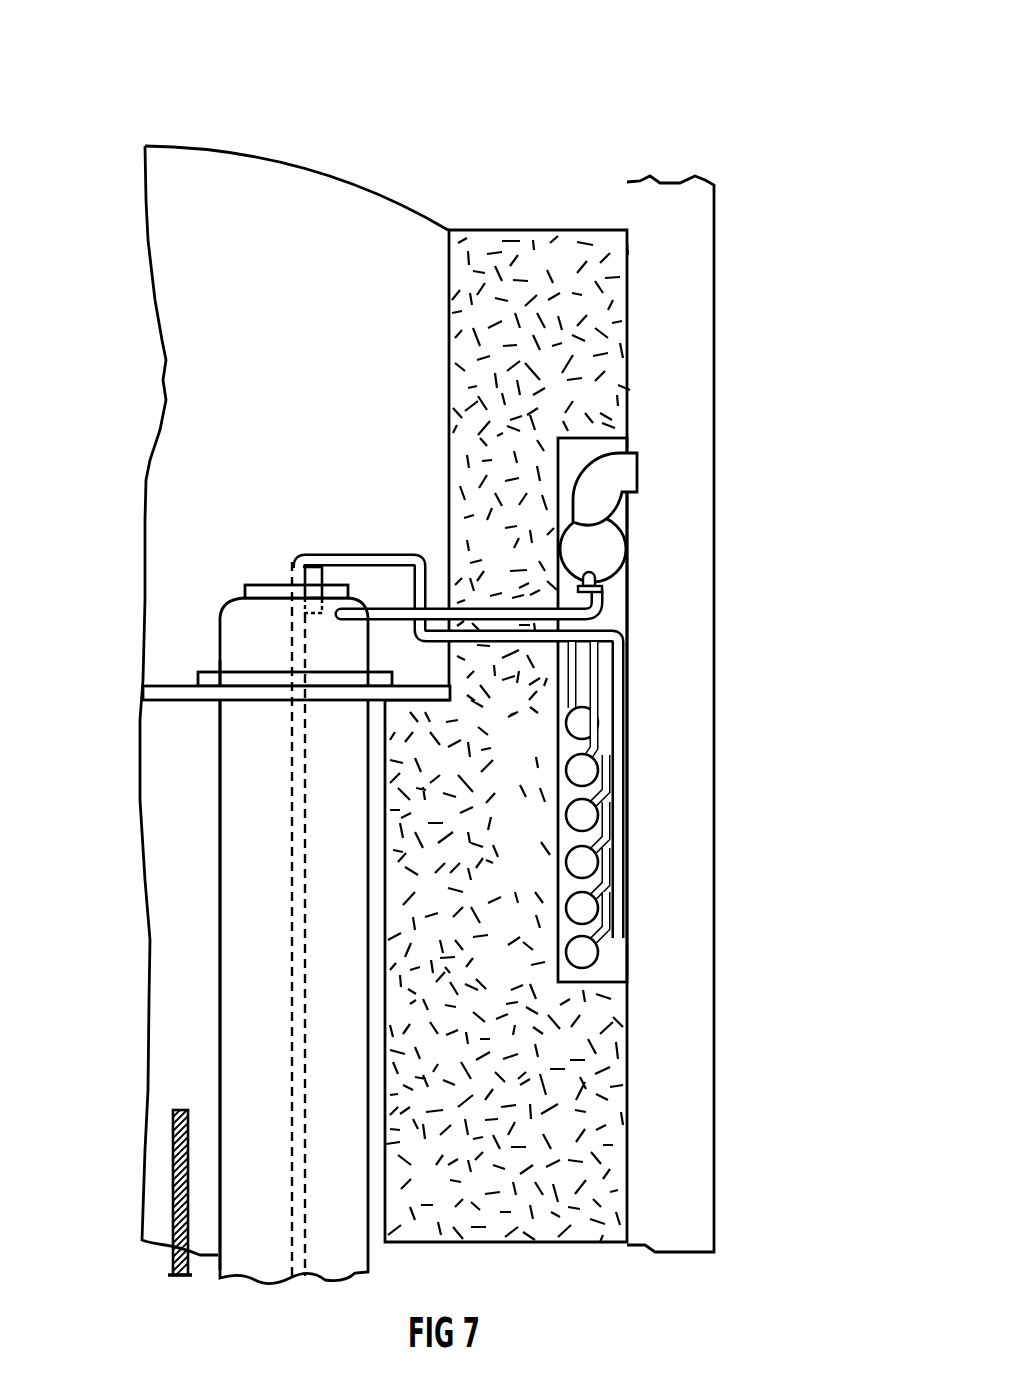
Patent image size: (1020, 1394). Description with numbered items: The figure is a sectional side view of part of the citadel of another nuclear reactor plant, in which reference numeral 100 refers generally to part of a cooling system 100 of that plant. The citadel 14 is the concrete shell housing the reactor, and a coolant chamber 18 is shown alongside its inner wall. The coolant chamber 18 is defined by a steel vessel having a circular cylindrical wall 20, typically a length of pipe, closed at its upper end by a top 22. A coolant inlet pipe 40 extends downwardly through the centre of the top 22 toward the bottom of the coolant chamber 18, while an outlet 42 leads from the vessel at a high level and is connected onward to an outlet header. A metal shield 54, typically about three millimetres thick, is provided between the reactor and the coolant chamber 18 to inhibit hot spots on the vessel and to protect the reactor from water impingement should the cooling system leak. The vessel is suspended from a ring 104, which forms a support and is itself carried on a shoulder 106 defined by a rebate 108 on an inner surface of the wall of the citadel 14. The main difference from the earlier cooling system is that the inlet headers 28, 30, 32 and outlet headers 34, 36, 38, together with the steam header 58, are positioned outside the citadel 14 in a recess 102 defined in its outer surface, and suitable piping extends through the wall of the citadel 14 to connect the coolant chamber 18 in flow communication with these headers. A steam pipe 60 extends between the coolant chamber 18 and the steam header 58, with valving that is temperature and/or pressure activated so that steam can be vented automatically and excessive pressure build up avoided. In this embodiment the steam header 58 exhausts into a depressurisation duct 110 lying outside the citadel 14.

The cooling system 100 is at (604, 115).
The citadel 14 is at (543, 275).
The depressurisation duct 110 is at (682, 380).
The top 22 is at (268, 592).
The outlet 42 is at (318, 575).
The rebate 108 is at (404, 567).
The steam pipe 60 is at (503, 607).
The steam header 58 is at (610, 553).
The recess 102 is at (621, 611).
The ring 104 is at (178, 695).
The shoulder 106 is at (426, 683).
The inlet header 28 is at (576, 728).
The inlet header 30 is at (576, 772).
The inlet header 32 is at (576, 822).
The outlet header 34 is at (570, 865).
The outlet header 36 is at (572, 912).
The outlet header 38 is at (574, 953).
The coolant chamber 18 is at (246, 760).
The circular cylindrical wall 20 is at (218, 815).
The coolant inlet pipe 40 is at (300, 893).
The metal shield 54 is at (175, 1178).